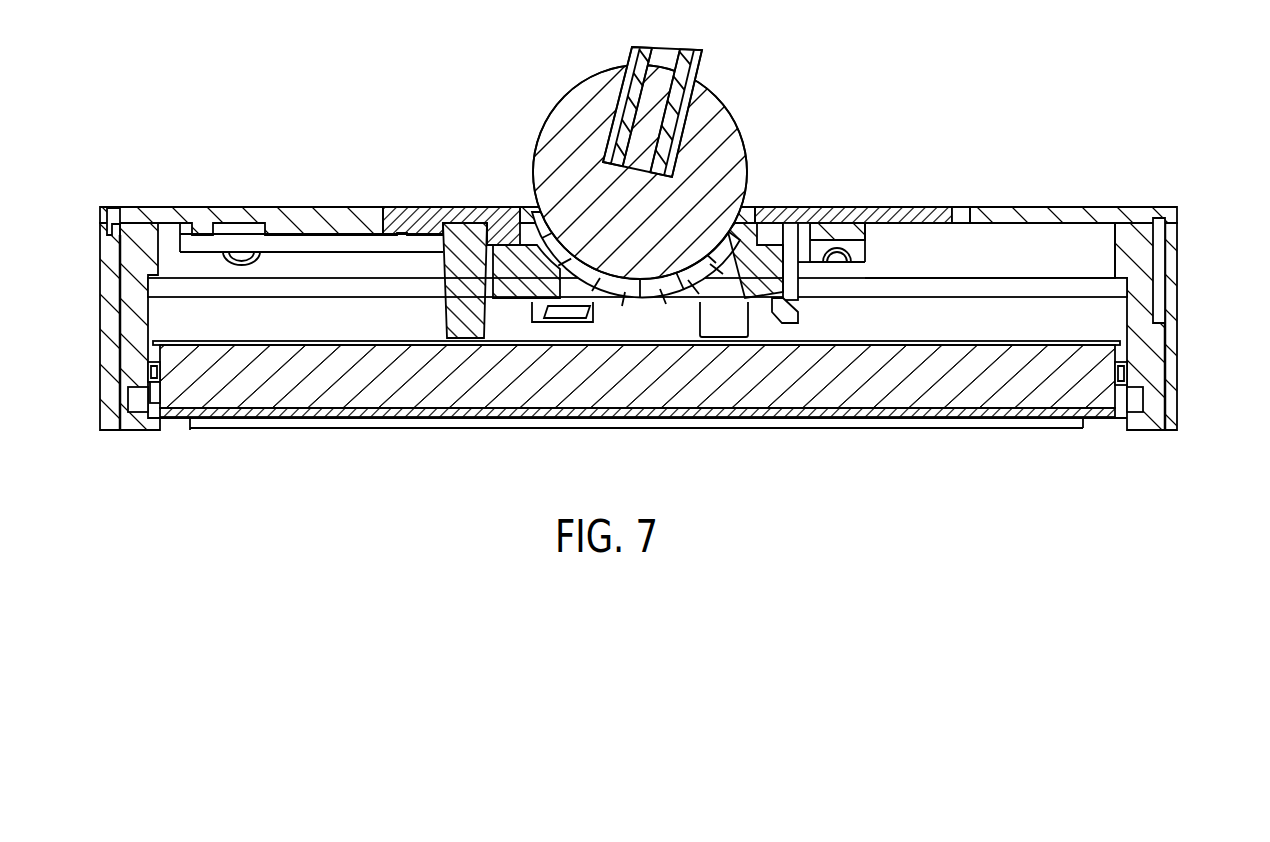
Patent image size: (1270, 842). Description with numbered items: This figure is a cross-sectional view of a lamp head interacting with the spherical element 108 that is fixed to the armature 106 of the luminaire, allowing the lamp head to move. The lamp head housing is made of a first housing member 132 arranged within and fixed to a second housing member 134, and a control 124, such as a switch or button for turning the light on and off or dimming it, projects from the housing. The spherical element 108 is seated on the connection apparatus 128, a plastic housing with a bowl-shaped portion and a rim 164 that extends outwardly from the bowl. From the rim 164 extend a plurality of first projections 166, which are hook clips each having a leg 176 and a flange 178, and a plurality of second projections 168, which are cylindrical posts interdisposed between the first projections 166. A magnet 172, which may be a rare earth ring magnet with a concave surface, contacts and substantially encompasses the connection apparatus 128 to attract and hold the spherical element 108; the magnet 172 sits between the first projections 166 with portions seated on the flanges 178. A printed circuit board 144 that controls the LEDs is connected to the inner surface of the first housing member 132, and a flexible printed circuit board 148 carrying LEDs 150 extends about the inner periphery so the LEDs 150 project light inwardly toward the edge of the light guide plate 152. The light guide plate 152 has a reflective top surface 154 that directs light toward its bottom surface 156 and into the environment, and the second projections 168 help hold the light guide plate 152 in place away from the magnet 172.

The armature 106 is at (690, 70).
The spherical element 108 is at (723, 118).
The control 124 is at (343, 210).
The connection apparatus 128 is at (633, 297).
The first housing member 132 is at (1032, 213).
The second housing member 134 is at (1163, 352).
The printed circuit board 144 is at (258, 250).
The flexible printed circuit board 148 is at (1118, 323).
The LEDs 150 is at (152, 372).
The light guide plate 152 is at (948, 390).
The reflective top surface 154 is at (895, 342).
The bottom surface 156 is at (1018, 412).
The rim 164 is at (488, 228).
The first projections 166 is at (562, 310).
The second projections 168 is at (463, 273).
The magnet 172 is at (518, 260).
The leg 176 is at (793, 247).
The flange 178 is at (780, 305).